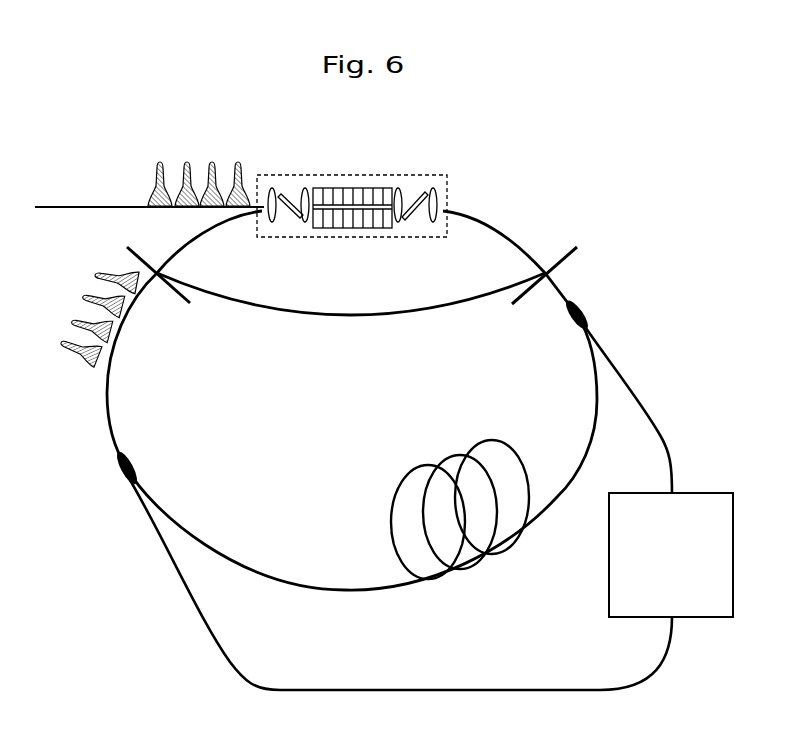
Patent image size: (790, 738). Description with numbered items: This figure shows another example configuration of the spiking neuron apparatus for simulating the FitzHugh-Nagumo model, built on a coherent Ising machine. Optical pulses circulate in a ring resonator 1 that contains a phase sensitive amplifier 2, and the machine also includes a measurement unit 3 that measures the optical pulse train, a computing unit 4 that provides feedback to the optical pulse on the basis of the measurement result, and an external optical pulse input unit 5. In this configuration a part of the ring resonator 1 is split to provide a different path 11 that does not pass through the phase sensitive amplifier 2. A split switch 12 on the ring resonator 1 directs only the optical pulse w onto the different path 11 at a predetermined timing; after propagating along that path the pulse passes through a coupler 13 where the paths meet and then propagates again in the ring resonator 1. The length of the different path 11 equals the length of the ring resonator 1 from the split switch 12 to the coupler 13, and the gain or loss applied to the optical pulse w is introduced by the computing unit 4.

The ring resonator 1 is at (320, 592).
The phase sensitive amplifier 2 is at (421, 175).
The measurement unit 3 is at (583, 307).
The computing unit 4 is at (704, 493).
The external optical pulse input unit 5 is at (118, 472).
The different path 11 is at (339, 318).
The split switch 12 is at (159, 278).
The coupler 13 is at (545, 270).